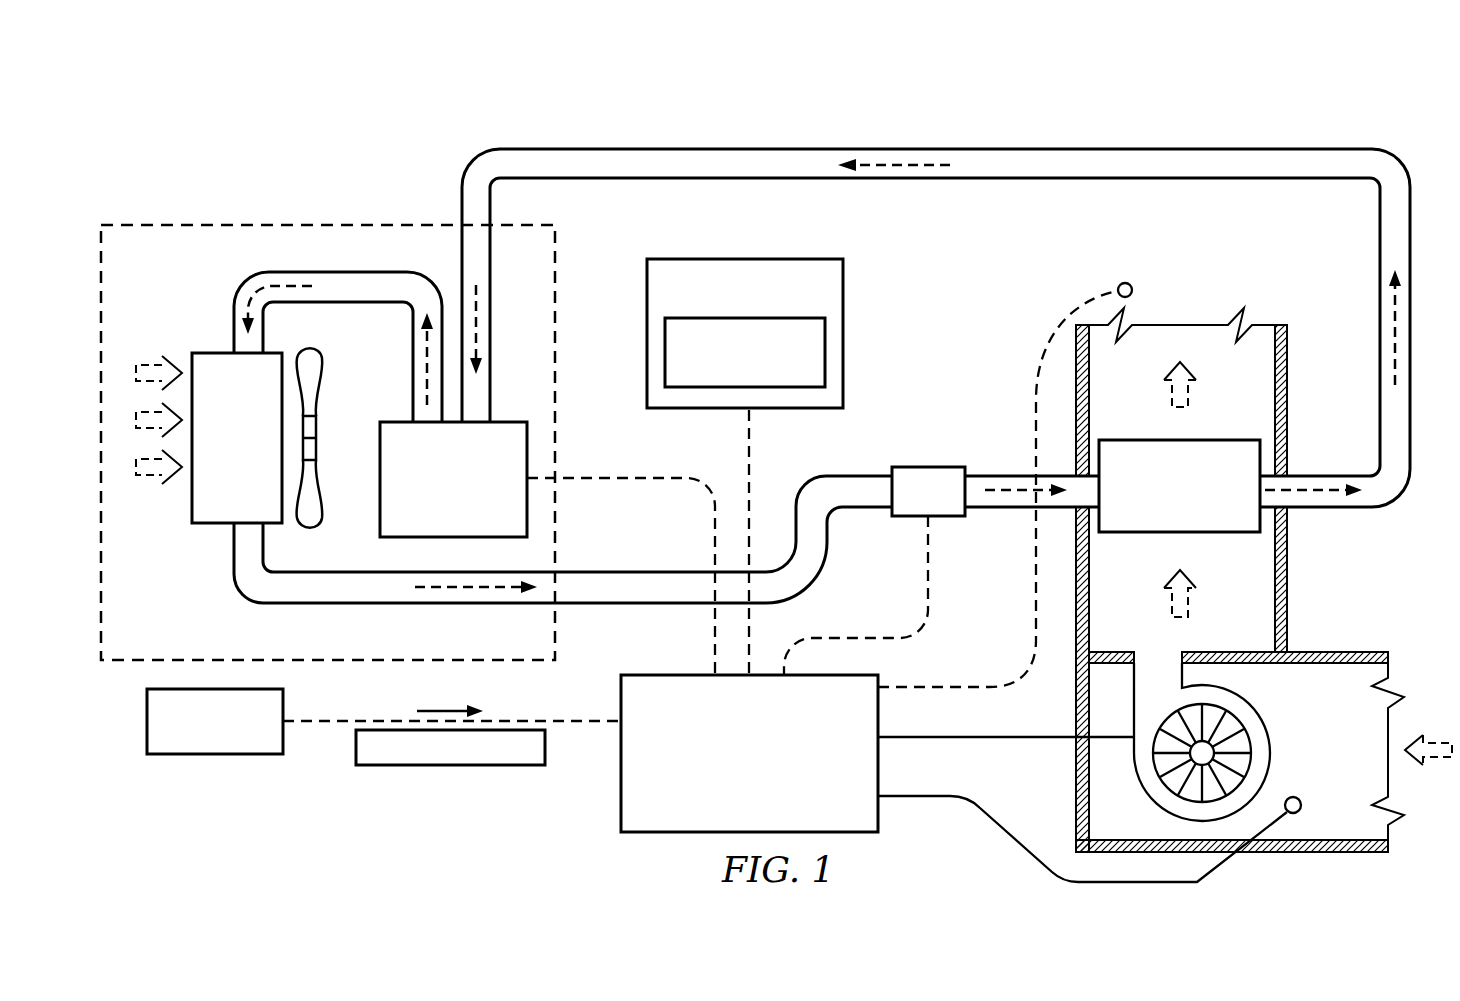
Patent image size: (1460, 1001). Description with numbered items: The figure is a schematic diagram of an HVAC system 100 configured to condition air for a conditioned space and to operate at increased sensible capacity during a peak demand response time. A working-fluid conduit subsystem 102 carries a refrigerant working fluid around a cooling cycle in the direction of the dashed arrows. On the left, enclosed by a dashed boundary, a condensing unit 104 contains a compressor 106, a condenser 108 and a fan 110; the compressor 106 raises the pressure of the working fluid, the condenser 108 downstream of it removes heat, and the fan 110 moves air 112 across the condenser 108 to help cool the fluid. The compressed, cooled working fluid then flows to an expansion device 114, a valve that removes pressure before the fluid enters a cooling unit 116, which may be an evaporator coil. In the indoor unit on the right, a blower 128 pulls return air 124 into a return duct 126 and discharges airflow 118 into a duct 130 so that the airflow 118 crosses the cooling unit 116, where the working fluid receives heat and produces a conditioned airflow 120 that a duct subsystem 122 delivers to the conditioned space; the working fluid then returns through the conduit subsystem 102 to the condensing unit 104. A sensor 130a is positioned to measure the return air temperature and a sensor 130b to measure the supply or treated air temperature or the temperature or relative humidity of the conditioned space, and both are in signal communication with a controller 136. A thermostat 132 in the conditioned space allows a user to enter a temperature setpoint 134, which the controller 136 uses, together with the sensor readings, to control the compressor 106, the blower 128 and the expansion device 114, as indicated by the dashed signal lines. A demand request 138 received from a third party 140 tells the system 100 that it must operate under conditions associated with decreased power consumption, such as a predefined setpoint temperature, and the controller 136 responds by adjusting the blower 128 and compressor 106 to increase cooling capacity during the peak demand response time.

The HVAC system 100 is at (1226, 97).
The working-fluid conduit subsystem 102 is at (642, 149).
The condensing unit 104 is at (320, 225).
The compressor 106 is at (453, 479).
The condenser 108 is at (192, 511).
The fan 110 is at (322, 368).
The air 112 is at (152, 358).
The expansion device 114 is at (928, 491).
The cooling unit 116 is at (1179, 486).
The airflow 118 is at (1194, 598).
The conditioned airflow 120 is at (1194, 390).
The duct subsystem 122 is at (1287, 375).
The return air 124 is at (1433, 766).
The return duct 126 is at (1315, 852).
The blower 128 is at (1262, 718).
The duct 130 is at (1287, 562).
The sensor 130a is at (1300, 800).
The sensor 130b is at (1132, 290).
The thermostat 132 is at (843, 287).
The temperature setpoint 134 is at (825, 353).
The controller 136 is at (907, 586).
The demand request 138 is at (458, 765).
The third party 140 is at (147, 712).